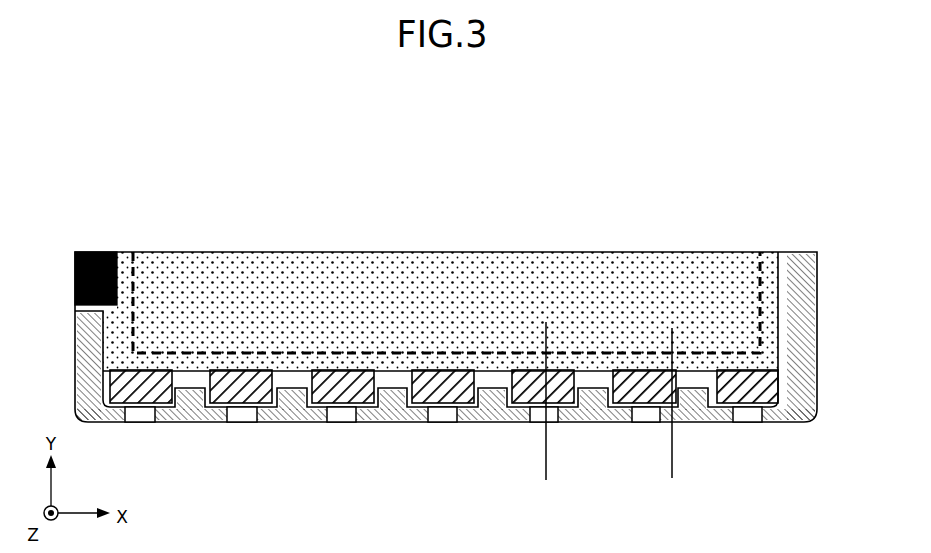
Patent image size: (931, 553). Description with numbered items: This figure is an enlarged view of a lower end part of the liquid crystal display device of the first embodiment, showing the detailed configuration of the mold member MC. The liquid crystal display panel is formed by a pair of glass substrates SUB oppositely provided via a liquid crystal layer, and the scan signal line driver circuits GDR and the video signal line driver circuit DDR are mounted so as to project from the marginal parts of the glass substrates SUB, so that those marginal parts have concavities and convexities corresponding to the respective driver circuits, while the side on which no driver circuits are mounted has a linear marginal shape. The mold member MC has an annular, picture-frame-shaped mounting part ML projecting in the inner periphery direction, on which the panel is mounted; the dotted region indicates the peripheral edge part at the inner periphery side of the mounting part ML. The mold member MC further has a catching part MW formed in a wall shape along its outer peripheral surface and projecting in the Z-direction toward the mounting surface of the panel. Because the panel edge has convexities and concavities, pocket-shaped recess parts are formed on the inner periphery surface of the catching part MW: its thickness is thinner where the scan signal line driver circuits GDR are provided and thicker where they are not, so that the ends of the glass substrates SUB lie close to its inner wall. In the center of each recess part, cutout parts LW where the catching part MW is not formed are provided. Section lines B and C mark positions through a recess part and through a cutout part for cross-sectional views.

The glass substrates SUB is at (440, 280).
The video signal line driver circuit DDR is at (108, 247).
The scan signal line driver circuits GDR is at (469, 362).
The cutout parts LW is at (450, 447).
The mold member MC is at (450, 295).
The mounting part ML is at (770, 291).
The catching part MW is at (790, 243).
The section line B-B' B is at (561, 406).
The section line C-C' C is at (689, 406).